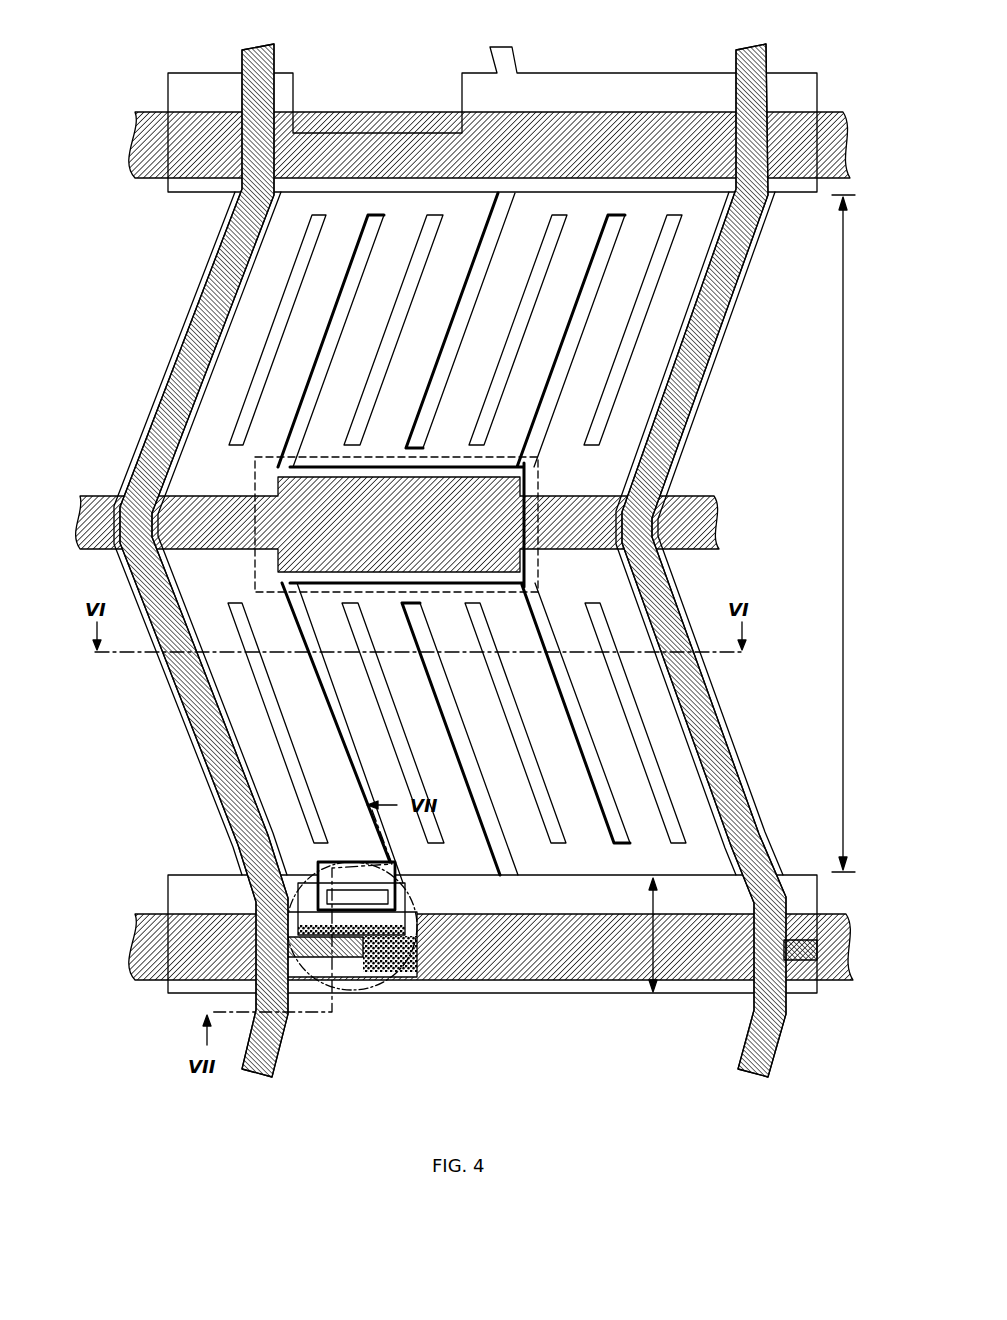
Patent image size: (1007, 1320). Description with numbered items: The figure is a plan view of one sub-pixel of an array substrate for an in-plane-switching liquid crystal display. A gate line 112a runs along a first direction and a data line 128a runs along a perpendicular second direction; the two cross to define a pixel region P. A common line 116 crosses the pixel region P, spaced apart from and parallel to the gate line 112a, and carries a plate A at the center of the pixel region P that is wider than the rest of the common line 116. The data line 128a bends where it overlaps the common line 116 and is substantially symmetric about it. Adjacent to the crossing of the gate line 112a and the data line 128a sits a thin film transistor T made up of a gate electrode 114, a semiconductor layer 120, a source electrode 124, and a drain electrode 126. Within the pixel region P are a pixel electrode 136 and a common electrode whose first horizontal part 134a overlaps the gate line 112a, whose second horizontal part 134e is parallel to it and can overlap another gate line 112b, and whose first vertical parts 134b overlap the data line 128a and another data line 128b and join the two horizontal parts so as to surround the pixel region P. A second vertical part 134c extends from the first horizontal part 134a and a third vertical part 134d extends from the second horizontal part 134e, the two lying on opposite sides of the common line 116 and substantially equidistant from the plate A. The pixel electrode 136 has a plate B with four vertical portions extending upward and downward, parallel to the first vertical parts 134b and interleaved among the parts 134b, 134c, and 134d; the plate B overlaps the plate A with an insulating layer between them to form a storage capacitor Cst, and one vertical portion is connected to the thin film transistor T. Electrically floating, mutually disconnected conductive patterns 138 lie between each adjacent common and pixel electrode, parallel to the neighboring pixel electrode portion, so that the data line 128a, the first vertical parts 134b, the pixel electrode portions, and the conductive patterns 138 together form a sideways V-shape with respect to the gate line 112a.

The gate line 112a is at (833, 982).
The another gate line 112b is at (143, 112).
The gate electrode 114 is at (343, 985).
The common line 116 is at (737, 498).
The semiconductor layer 120 is at (400, 976).
The source electrode 124 is at (313, 978).
The drain electrode 126 is at (405, 886).
The data line 128a is at (208, 737).
The another data line 128b is at (767, 1050).
The first horizontal part 134a is at (655, 940).
The first vertical parts 134b is at (690, 418).
The second vertical part 134c is at (484, 780).
The third vertical part 134d is at (467, 318).
The second horizontal part 134e is at (577, 92).
The pixel electrode 136 is at (322, 697).
The conductive patterns 138 is at (272, 322).
The storage capacitor Cst is at (257, 470).
The thin film transistor T is at (373, 992).
The pixel region P is at (843, 533).
The plate of the common line A is at (447, 574).
The plate of the pixel electrode B is at (318, 586).